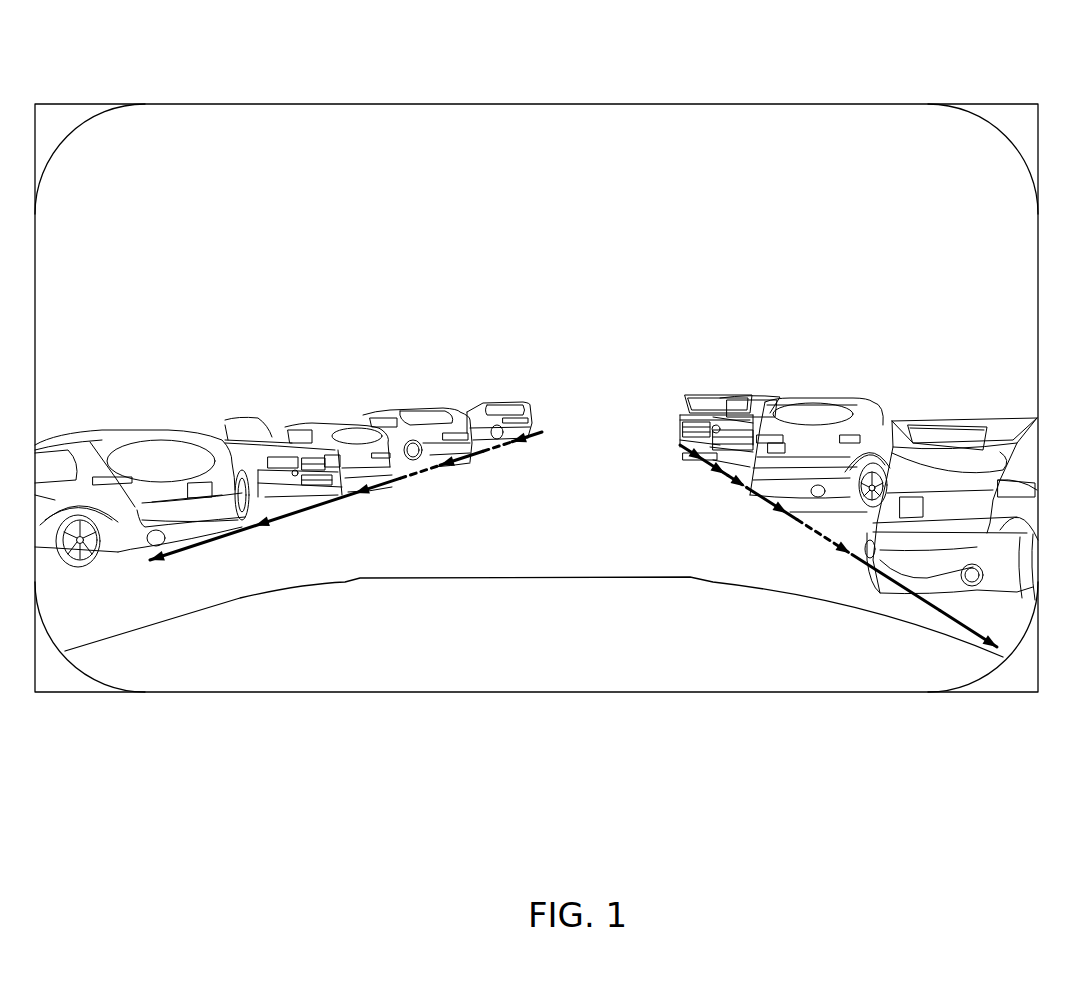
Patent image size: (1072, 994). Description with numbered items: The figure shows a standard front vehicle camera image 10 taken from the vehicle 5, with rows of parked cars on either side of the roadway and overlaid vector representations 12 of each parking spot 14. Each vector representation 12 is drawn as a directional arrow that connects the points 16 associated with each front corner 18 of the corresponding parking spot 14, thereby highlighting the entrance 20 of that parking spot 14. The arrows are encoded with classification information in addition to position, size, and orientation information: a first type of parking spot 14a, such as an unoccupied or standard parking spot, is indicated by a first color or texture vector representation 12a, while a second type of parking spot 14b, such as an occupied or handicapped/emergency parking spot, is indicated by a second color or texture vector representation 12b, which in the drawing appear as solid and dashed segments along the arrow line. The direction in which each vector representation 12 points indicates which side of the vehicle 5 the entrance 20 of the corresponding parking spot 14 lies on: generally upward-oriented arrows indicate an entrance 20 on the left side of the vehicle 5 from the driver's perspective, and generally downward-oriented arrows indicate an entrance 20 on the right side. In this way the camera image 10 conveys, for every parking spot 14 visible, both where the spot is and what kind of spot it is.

The front vehicle camera image 10 is at (937, 69).
The vehicle 5 is at (643, 673).
The vector representation 12 is at (337, 503).
The entrance 20 is at (337, 503).
The parking spot 14 is at (306, 500).
The point 16 is at (392, 480).
The front corner 18 is at (392, 480).
The first color or texture vector representation 12a is at (798, 520).
The first type of parking spot 14a is at (852, 527).
The second color or texture vector representation 12b is at (900, 587).
The second type of parking spot 14b is at (987, 607).